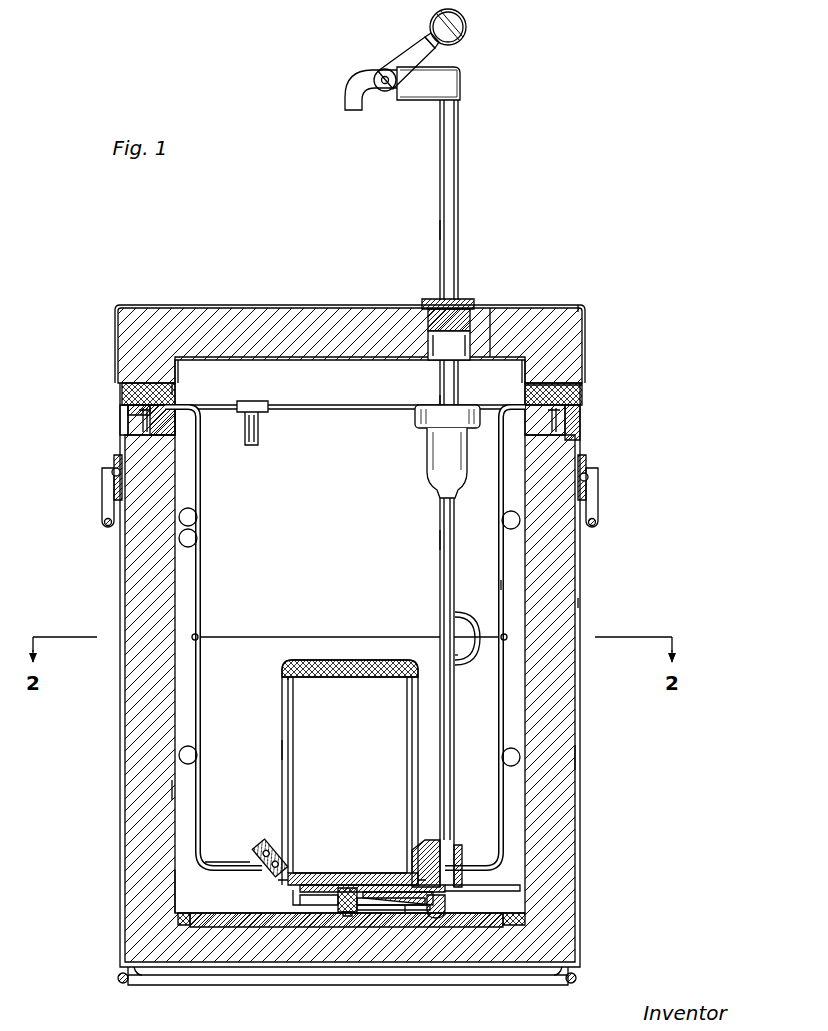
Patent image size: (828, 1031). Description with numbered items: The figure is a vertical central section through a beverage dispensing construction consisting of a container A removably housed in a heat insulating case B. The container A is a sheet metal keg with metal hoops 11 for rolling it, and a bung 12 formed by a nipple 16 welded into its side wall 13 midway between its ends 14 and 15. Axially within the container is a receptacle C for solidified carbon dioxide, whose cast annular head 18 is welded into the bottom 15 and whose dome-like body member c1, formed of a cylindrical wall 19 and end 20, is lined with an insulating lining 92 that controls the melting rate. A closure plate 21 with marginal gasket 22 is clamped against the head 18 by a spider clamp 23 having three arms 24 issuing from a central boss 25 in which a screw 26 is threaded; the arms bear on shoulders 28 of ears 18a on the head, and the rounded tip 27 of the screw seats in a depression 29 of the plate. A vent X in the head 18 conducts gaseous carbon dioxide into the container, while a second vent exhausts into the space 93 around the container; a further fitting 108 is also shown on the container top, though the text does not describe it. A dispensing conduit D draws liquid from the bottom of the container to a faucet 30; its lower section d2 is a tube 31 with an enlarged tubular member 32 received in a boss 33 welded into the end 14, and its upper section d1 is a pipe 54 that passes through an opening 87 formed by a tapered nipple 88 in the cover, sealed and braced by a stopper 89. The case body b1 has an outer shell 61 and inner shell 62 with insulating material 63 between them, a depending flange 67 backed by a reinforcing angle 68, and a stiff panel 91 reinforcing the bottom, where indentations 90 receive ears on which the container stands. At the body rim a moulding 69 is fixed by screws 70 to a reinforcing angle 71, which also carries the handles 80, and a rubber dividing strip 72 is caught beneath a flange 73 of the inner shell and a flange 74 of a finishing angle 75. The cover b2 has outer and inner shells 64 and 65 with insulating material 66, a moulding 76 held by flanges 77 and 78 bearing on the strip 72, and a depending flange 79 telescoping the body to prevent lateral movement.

The metal hoops 11 is at (200, 552).
The bung 12 is at (465, 630).
The side wall 13 is at (500, 562).
The end 14 is at (333, 402).
The end 15 is at (222, 862).
The nipple 16 is at (470, 657).
The annular head 18 is at (420, 857).
The ears 18a is at (293, 899).
The cylindrical wall 19 is at (282, 712).
The end 20 is at (330, 705).
The closure plate 21 is at (318, 878).
The marginal gasket 22 is at (446, 896).
The spider clamp 23 is at (372, 905).
The arms 24 is at (400, 900).
The central boss 25 is at (330, 905).
The screw 26 is at (347, 914).
The rounded tip 27 is at (348, 888).
The shoulders 28 is at (420, 910).
The depression 29 is at (352, 890).
The valve or faucet 30 is at (420, 84).
The tube 31 is at (440, 575).
The enlarged tubular member 32 is at (440, 462).
The boss 33 is at (432, 418).
The tube or pipe 54 is at (445, 165).
The outer shell 61 is at (580, 820).
The inner shell 62 is at (176, 792).
The heat insulating material 63 is at (560, 680).
The outer shell 64 is at (266, 305).
The inner shell 65 is at (345, 358).
The insulating material 66 is at (333, 325).
The depending flange 67 is at (120, 985).
The reinforcing angle 68 is at (137, 975).
The moulding 69 is at (582, 440).
The screws 70 is at (568, 420).
The reinforcing angle 71 is at (582, 445).
The dividing strip 72 is at (145, 384).
The flange 73 is at (178, 420).
The flange 74 is at (126, 388).
The finishing angle 75 is at (121, 435).
The moulding 76 is at (582, 386).
The flange 77 is at (175, 388).
The flange 78 is at (126, 402).
The depending flange 79 is at (120, 425).
The handles 80 is at (113, 468).
The opening 87 is at (500, 322).
The tapered nipple 88 is at (427, 340).
The stopper 89 is at (467, 300).
The indentations 90 is at (450, 910).
The stiff panel 91 is at (248, 920).
The insulating lining 92 is at (297, 740).
The space 93 is at (188, 880).
The vent fitting 108 is at (258, 420).
The container A is at (510, 585).
The case B is at (583, 603).
The receptacle or capsule C is at (283, 656).
The dispensing conduit D is at (466, 401).
The vent X is at (263, 842).
The body b1 is at (580, 757).
The cover b2 is at (586, 312).
The dome-like body member c1 is at (280, 748).
The upper conduit section d1 is at (460, 226).
The lower conduit section d2 is at (438, 540).